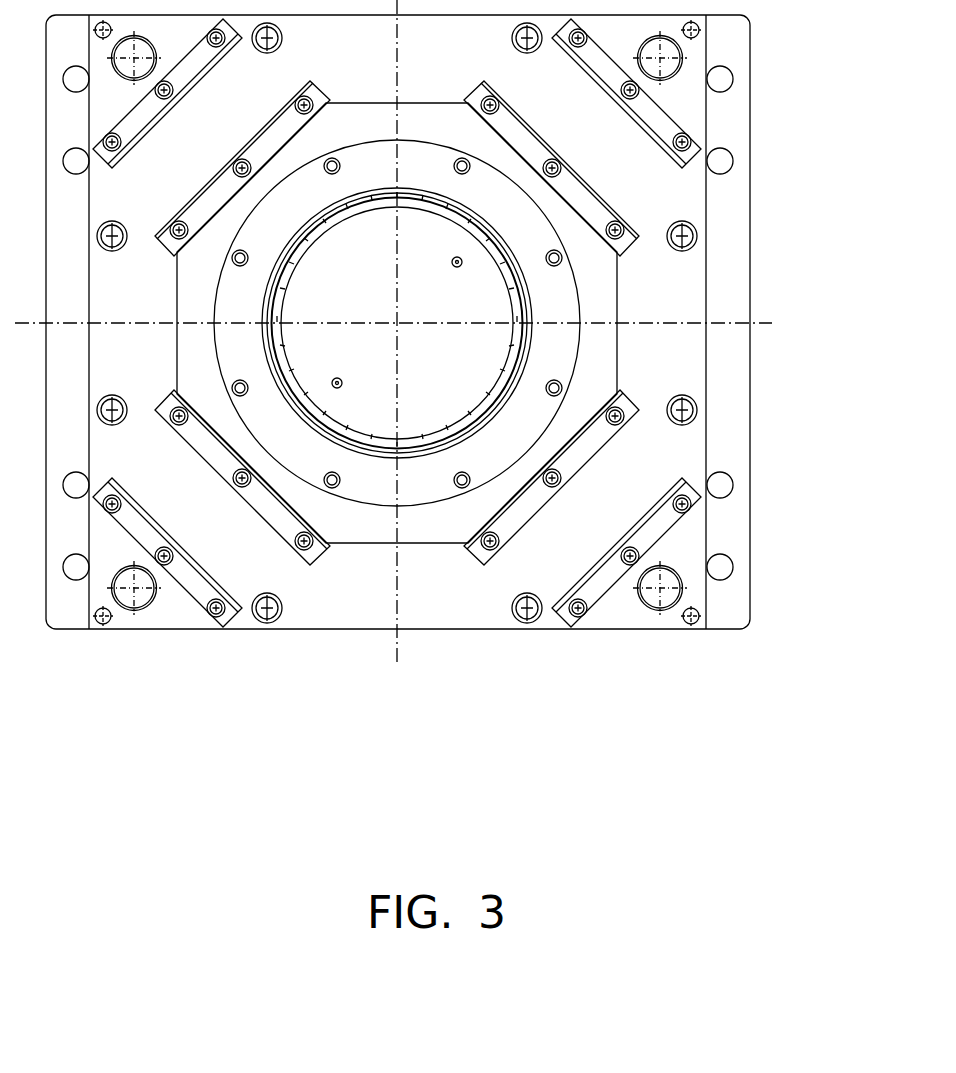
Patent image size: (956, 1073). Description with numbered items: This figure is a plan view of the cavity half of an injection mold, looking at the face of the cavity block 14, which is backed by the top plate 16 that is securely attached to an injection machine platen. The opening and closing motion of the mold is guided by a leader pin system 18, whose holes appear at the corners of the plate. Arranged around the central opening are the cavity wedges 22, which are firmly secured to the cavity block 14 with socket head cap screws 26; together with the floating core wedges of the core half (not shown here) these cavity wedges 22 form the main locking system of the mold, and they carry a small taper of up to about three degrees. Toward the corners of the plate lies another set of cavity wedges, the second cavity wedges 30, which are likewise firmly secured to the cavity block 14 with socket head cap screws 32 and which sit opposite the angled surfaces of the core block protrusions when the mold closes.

The cavity block 14 is at (670, 445).
The top plate 16 is at (729, 377).
The leader pin system 18 is at (668, 65).
The cavity wedges 22 is at (655, 477).
The socket head cap screws 26 is at (562, 482).
The second cavity wedges 30 is at (699, 569).
The socket head cap screws 32 is at (632, 558).